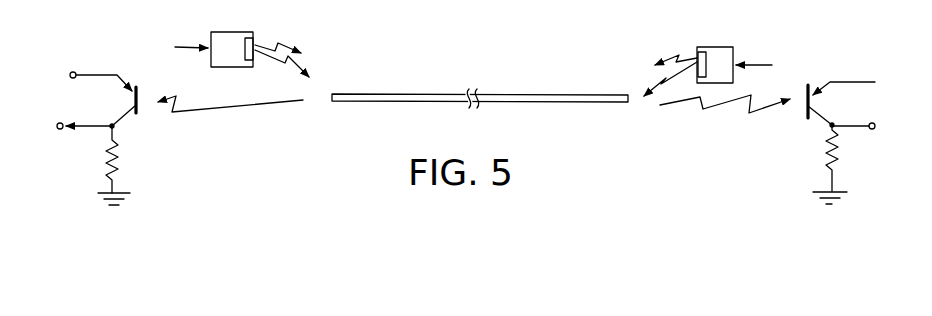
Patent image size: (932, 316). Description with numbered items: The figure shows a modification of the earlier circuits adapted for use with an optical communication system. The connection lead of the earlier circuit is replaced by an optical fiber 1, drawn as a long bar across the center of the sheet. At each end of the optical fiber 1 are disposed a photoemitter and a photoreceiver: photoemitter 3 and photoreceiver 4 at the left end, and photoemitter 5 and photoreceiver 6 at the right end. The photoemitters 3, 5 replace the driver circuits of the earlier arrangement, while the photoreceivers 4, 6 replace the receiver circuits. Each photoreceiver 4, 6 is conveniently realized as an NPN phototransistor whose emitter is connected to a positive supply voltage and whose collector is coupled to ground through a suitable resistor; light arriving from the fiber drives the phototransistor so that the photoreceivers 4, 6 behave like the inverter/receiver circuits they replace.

The optical fiber 1 is at (408, 94).
The photoemitter 3 is at (233, 32).
The photoreceiver 4 is at (140, 107).
The photoemitter 5 is at (723, 47).
The photoreceiver 6 is at (806, 109).